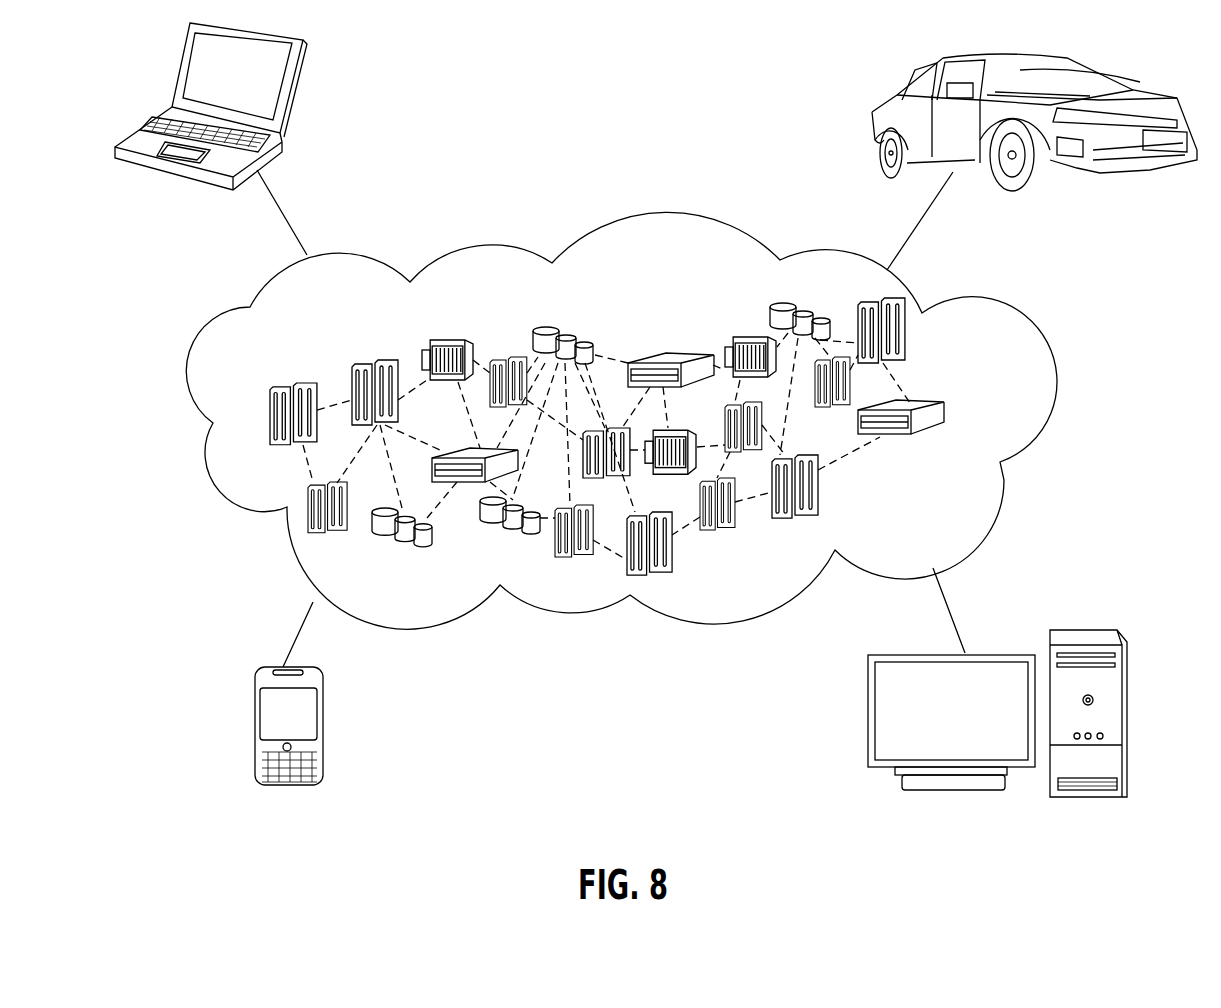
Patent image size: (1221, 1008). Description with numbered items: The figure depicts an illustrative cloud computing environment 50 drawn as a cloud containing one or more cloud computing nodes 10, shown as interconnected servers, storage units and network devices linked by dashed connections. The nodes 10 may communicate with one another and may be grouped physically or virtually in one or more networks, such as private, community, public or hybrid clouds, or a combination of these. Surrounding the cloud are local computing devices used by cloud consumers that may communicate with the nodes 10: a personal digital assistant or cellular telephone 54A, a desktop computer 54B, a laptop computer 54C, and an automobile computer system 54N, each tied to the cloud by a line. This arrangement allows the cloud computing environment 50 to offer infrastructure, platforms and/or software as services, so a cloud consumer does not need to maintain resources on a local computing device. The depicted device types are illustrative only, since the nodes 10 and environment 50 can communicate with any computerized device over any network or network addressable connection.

The cloud computing nodes 10 is at (983, 415).
The cloud computing environment 50 is at (1010, 330).
The personal digital assistant (PDA) or cellular telephone 54A is at (255, 732).
The desktop computer 54B is at (1090, 630).
The laptop computer 54C is at (295, 93).
The automobile computer system 54N is at (880, 102).